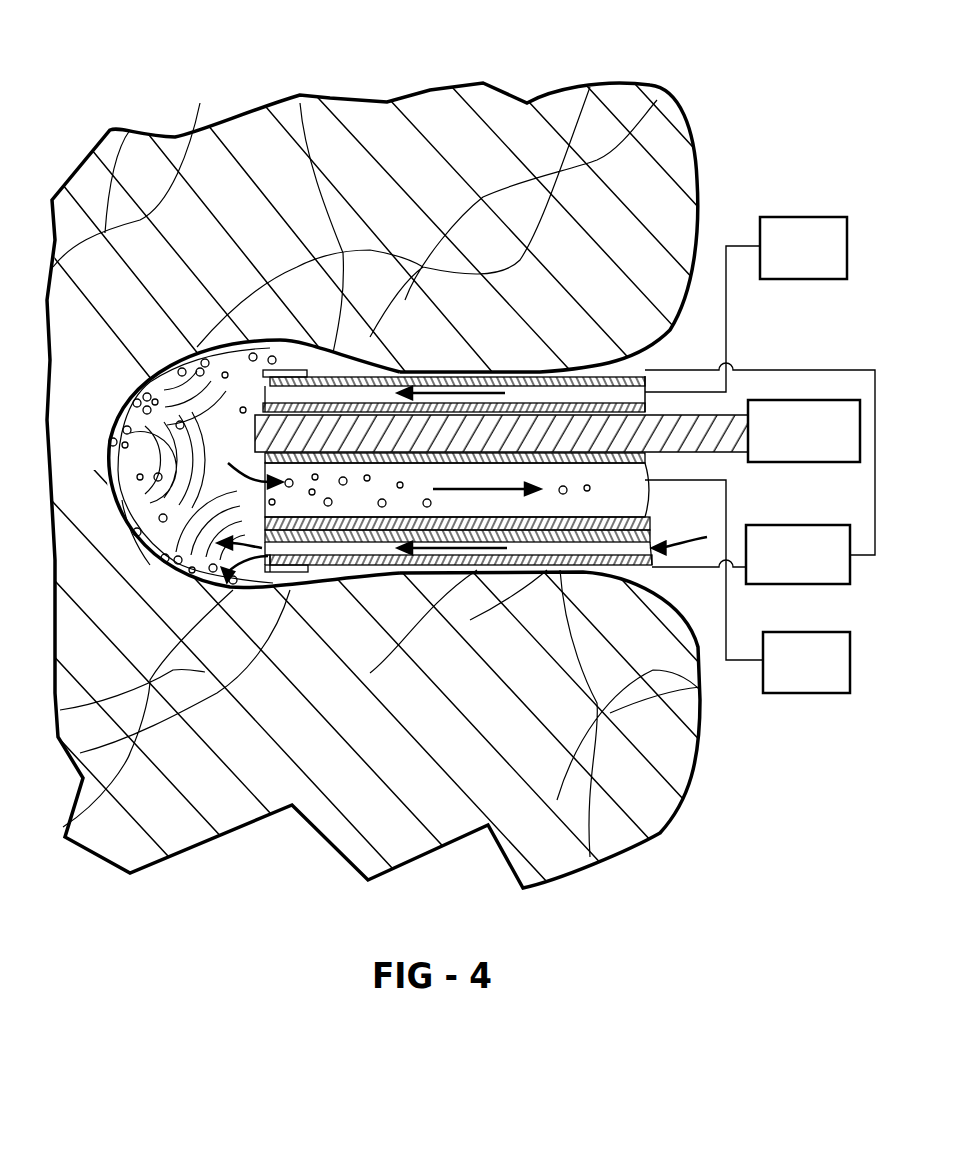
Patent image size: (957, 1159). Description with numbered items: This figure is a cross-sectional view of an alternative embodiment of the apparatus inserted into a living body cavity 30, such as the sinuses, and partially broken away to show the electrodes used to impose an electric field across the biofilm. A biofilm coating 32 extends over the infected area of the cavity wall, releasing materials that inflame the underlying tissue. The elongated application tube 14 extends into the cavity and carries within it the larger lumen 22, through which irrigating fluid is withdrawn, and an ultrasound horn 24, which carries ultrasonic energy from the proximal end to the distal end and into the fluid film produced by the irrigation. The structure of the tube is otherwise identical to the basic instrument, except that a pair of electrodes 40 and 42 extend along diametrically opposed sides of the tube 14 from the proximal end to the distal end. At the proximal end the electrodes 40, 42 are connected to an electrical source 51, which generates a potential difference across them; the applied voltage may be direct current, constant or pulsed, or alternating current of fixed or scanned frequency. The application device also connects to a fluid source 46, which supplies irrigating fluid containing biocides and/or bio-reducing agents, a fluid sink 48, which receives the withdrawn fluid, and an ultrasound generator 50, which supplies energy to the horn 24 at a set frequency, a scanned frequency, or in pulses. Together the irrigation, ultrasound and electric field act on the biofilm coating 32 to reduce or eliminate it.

The application tube 14 is at (607, 372).
The larger lumen 22 is at (282, 575).
The ultrasound horn 24 is at (340, 430).
The body cavity 30 is at (233, 263).
The biofilm coating 32 is at (150, 565).
The electrode 40 is at (297, 353).
The electrode 42 is at (292, 572).
The fluid source 46 is at (812, 217).
The fluid sink 48 is at (805, 693).
The ultrasound generator 50 is at (808, 462).
The electrical source 51 is at (820, 584).